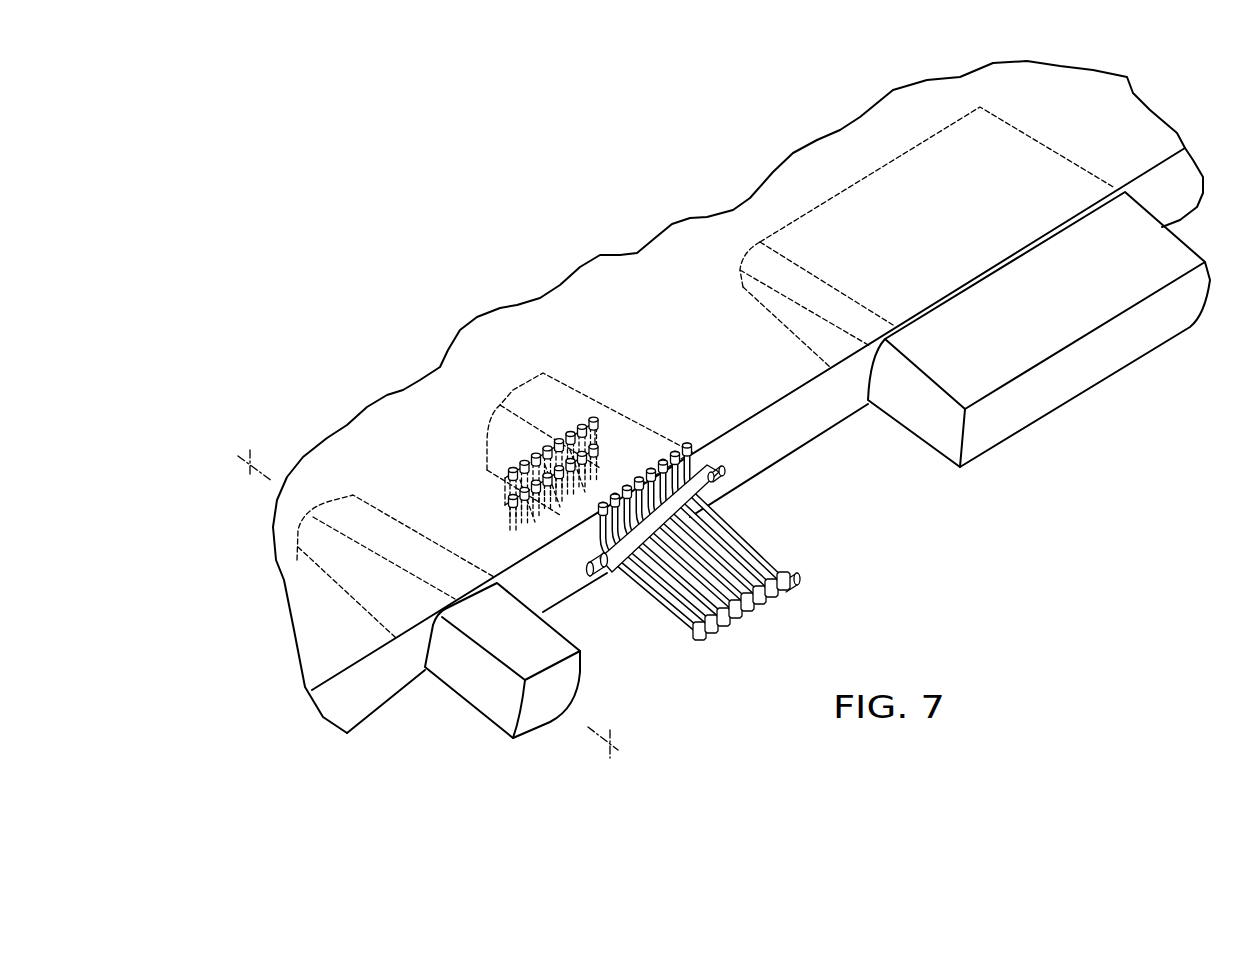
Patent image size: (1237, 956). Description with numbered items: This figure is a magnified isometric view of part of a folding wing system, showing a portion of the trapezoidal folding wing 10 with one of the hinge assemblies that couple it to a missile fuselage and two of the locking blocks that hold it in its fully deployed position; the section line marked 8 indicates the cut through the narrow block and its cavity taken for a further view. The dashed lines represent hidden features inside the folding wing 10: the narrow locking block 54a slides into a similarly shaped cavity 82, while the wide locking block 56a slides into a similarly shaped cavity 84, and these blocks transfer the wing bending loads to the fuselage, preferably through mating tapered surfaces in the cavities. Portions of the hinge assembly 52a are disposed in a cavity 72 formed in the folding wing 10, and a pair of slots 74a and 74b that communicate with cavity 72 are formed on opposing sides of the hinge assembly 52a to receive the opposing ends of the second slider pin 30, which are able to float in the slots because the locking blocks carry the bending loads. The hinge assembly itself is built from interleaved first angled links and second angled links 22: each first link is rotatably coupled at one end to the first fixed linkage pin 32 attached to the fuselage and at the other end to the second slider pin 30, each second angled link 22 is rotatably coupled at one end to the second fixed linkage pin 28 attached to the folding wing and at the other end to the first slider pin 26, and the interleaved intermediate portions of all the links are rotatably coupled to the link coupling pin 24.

The folding wing 10 is at (837, 413).
The second angled links 22 is at (668, 617).
The link coupling pin 24 is at (608, 575).
The first slider pin 26 is at (785, 585).
The second fixed linkage pin 28 is at (724, 470).
The second slider pin 30 is at (490, 482).
The first fixed linkage pin 32 is at (685, 440).
The hinge assembly 52a is at (738, 554).
The narrow locking block 54a is at (468, 703).
The wide locking block 56a is at (1037, 423).
The cavity 72 is at (538, 377).
The slot 74a is at (512, 498).
The slot 74b is at (613, 432).
The cavity 82 is at (330, 507).
The cavity 84 is at (813, 207).
The section line 8- 8 is at (247, 467).